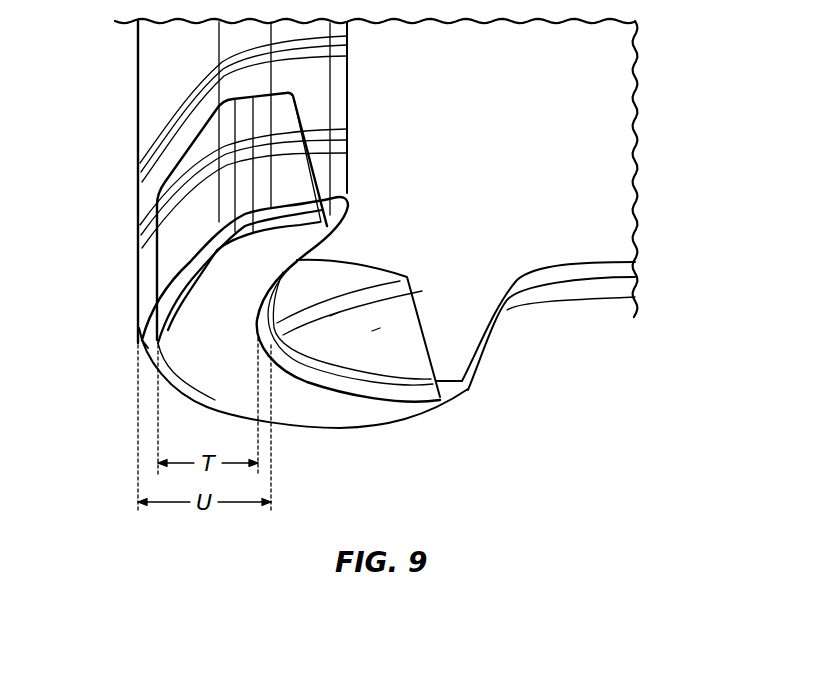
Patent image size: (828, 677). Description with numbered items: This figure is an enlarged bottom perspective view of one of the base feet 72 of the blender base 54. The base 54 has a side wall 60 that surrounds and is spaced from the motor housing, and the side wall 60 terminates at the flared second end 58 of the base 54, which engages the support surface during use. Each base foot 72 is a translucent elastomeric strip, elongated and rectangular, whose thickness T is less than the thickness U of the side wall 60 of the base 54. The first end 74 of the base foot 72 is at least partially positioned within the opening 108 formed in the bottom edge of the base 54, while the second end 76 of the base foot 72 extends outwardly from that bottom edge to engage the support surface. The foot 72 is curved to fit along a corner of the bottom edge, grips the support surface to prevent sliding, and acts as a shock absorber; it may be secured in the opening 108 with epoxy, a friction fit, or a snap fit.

The base 54 is at (143, 70).
The first end of the base feet 74 is at (180, 163).
The base feet 72 is at (177, 242).
The opening 108 is at (157, 343).
The second end of the base feet 76 is at (182, 352).
The side wall 60 is at (503, 125).
The second end of the base 58 is at (635, 233).